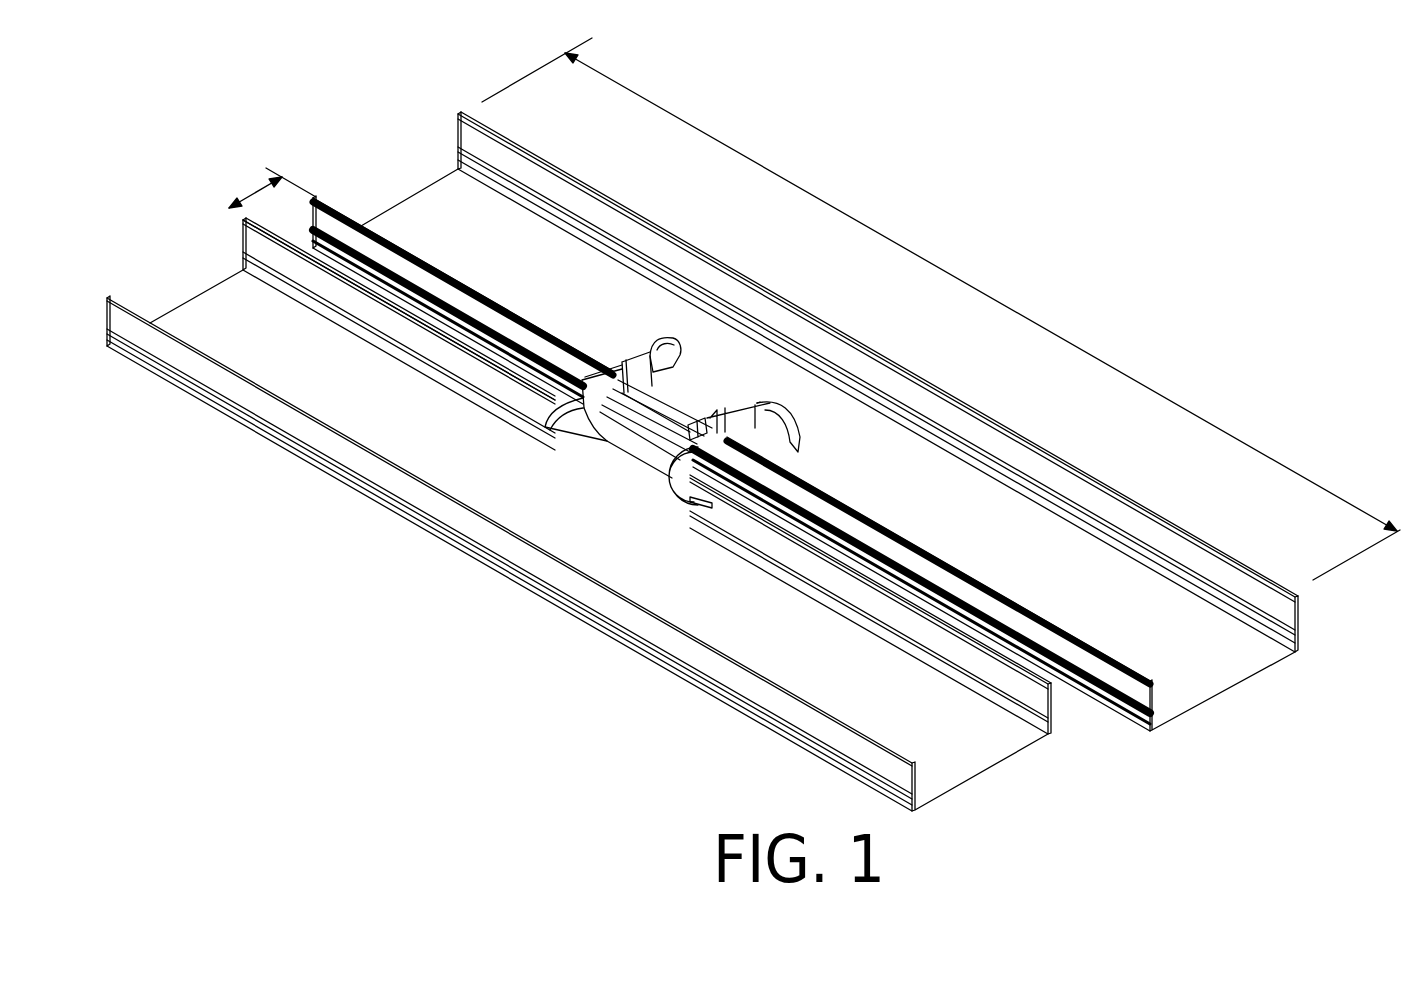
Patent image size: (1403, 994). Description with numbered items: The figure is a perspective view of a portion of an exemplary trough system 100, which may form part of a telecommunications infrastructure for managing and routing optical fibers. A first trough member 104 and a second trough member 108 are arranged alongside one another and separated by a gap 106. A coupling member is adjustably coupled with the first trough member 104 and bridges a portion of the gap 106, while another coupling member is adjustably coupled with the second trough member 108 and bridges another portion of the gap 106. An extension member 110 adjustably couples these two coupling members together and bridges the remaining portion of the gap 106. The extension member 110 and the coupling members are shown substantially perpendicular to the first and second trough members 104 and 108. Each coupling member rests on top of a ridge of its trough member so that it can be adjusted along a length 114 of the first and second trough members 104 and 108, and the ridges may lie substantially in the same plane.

The trough system 100 is at (195, 88).
The first trough member 104 is at (462, 557).
The gap 106 is at (251, 186).
The second trough member 108 is at (802, 298).
The extension member 110 is at (630, 368).
The length 114 is at (941, 309).